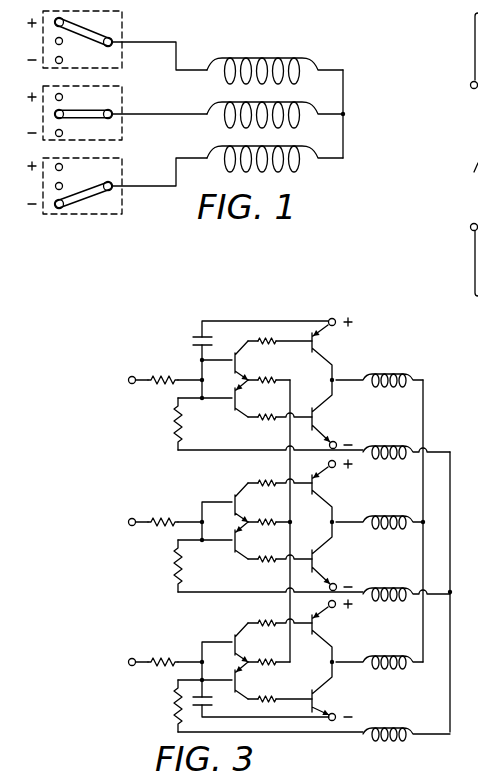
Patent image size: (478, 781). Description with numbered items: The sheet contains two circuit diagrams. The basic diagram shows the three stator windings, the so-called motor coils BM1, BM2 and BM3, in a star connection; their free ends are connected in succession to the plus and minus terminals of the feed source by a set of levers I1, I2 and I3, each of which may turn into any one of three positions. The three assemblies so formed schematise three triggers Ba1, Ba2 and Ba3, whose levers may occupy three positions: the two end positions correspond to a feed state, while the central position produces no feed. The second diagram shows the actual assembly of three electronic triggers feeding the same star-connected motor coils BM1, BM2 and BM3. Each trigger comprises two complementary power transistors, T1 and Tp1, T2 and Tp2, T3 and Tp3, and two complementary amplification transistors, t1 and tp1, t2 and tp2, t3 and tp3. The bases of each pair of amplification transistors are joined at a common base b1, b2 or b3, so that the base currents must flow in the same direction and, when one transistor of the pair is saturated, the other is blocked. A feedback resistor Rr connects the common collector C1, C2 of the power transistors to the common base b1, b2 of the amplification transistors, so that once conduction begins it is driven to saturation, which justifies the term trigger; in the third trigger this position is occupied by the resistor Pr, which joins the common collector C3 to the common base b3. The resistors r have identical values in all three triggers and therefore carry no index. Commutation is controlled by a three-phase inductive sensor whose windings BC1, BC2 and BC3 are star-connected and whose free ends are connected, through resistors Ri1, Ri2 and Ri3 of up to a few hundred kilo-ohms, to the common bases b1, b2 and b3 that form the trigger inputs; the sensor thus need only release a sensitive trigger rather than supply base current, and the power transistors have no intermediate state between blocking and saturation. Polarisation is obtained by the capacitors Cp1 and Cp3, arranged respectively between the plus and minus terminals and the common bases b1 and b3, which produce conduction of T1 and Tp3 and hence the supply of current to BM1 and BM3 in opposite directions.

In FIG. 1, the trigger Ba1 is at (95, 38).
In FIG. 1, the trigger Ba2 is at (95, 112).
In FIG. 1, the trigger Ba3 is at (94, 184).
In FIG. 1, the lever I1 is at (84, 43).
In FIG. 1, the lever I2 is at (84, 119).
In FIG. 1, the lever I3 is at (84, 185).
In FIG. 1, the motor coil BM1 is at (275, 60).
In FIG. 3, the motor coil BM1 is at (379, 371).
In FIG. 1, the motor coil BM2 is at (275, 107).
In FIG. 3, the motor coil BM2 is at (379, 513).
In FIG. 1, the motor coil BM3 is at (275, 150).
In FIG. 3, the motor coil BM3 is at (379, 653).
In FIG. 3, the sensor winding BC1 is at (406, 443).
In FIG. 3, the sensor winding BC2 is at (406, 585).
In FIG. 3, the sensor winding BC3 is at (406, 725).
In FIG. 3, the common collector C1 is at (217, 383).
In FIG. 3, the common collector C2 is at (217, 525).
In FIG. 3, the common collector C3 is at (217, 665).
In FIG. 3, the feedback resistor Rr is at (163, 441).
In FIG. 3, the input resistor Pr is at (163, 652).
In FIG. 3, the resistor Ri1 is at (161, 424).
In FIG. 3, the resistor Ri2 is at (161, 566).
In FIG. 3, the resistor Ri3 is at (161, 706).
In FIG. 3, the polarisation capacitor Cp1 is at (182, 333).
In FIG. 3, the polarisation capacitor Cp3 is at (221, 703).
In FIG. 3, the common base b1 is at (213, 388).
In FIG. 3, the common base b2 is at (213, 530).
In FIG. 3, the common base b3 is at (213, 670).
In FIG. 3, the amplification transistor t1 is at (245, 360).
In FIG. 3, the amplification transistor t2 is at (245, 502).
In FIG. 3, the amplification transistor t3 is at (245, 642).
In FIG. 3, the complementary amplification transistor tp1 is at (236, 409).
In FIG. 3, the complementary amplification transistor tp2 is at (236, 551).
In FIG. 3, the complementary amplification transistor tp3 is at (236, 691).
In FIG. 3, the power transistor T1 is at (332, 349).
In FIG. 3, the power transistor T2 is at (332, 491).
In FIG. 3, the power transistor T3 is at (332, 631).
In FIG. 3, the complementary power transistor Tp1 is at (332, 414).
In FIG. 3, the complementary power transistor Tp2 is at (332, 556).
In FIG. 3, the complementary power transistor Tp3 is at (332, 692).
In FIG. 3, the resistor r is at (272, 527).